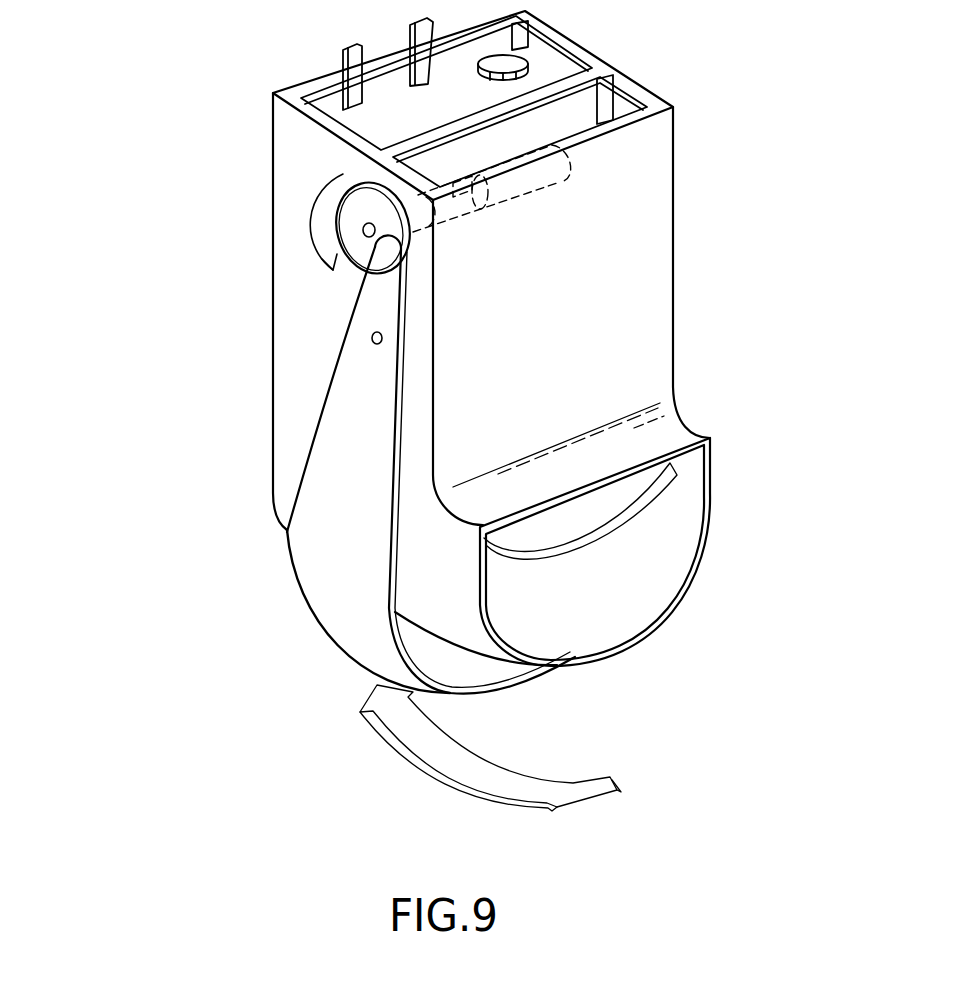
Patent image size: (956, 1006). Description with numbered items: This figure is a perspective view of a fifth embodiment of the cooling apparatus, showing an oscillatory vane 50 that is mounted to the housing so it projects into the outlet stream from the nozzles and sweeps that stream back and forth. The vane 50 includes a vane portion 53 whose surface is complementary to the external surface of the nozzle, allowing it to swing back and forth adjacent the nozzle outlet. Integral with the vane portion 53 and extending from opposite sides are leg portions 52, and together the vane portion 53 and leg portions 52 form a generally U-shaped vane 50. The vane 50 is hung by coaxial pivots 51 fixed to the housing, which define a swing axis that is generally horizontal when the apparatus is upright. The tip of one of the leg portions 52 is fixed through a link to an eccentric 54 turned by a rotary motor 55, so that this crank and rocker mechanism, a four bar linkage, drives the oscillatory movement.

The oscillatory vane 50 is at (258, 588).
The coaxial pivots 51 is at (371, 339).
The leg portions 52 is at (330, 447).
The vane portion 53 is at (337, 610).
The eccentric 54 is at (356, 238).
The rotary motor 55 is at (537, 178).